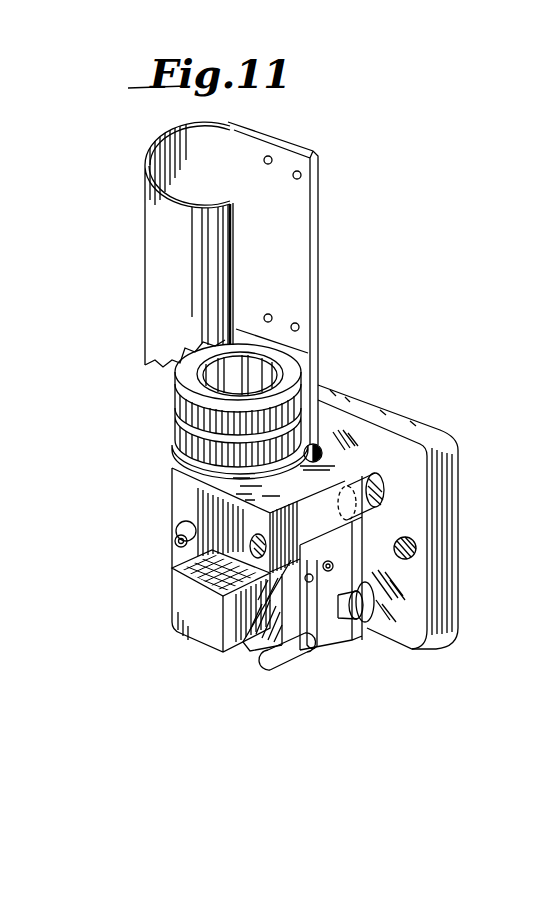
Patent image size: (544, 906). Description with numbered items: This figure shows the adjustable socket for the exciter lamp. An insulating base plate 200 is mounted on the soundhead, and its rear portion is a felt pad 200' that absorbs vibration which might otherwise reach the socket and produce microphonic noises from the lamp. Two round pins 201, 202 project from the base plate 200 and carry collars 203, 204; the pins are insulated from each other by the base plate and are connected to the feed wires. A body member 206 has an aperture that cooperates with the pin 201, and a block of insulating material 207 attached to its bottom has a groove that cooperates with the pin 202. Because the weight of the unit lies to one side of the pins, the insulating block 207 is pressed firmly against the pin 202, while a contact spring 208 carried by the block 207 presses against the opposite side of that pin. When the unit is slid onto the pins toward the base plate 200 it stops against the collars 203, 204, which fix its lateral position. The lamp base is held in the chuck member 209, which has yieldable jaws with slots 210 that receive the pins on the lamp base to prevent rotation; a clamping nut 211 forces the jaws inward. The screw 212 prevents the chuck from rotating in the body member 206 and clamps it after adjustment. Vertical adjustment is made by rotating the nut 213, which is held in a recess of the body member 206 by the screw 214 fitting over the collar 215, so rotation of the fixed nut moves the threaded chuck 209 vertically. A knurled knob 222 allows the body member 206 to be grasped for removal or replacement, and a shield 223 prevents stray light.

The base plate 200 is at (400, 524).
The felt pad 200' is at (389, 415).
The round pin 201 is at (331, 563).
The round pin 202 is at (279, 668).
The collar 203 is at (376, 480).
The collar 204 is at (362, 624).
The body member 206 is at (177, 503).
The block of insulating material 207 is at (244, 646).
The contact spring 208 is at (324, 648).
The chuck member 209 is at (220, 368).
The slots 210 is at (302, 372).
The clamping nut 211 is at (183, 411).
The screw 212 is at (178, 542).
The nut 213 is at (182, 433).
The screw 214 is at (324, 452).
The collar 215 is at (264, 478).
The knurled knob 222 is at (183, 600).
The shield 223 is at (152, 260).